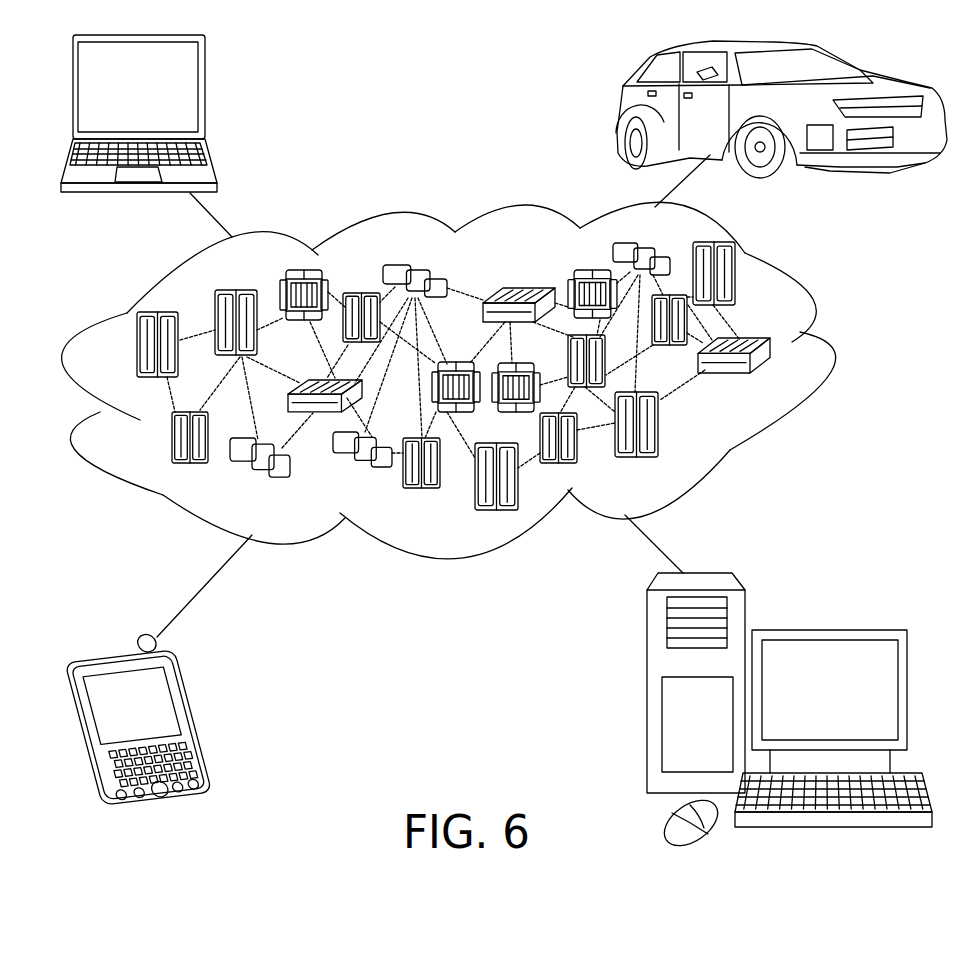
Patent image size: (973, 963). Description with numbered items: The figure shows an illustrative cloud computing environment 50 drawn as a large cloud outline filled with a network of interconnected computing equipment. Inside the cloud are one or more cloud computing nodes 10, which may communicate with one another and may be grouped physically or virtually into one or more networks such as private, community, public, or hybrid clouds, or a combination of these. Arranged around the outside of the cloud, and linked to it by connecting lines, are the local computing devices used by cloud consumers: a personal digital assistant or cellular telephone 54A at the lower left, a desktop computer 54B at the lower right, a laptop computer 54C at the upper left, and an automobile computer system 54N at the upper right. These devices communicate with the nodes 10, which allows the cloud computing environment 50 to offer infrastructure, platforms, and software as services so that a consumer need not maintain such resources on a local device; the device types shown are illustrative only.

The cloud computing node 10 is at (773, 385).
The cloud computing environment 50 is at (835, 352).
The personal digital assistant or cellular telephone 54A is at (195, 718).
The desktop computer 54B is at (825, 630).
The laptop computer 54C is at (207, 95).
The automobile computer system 54N is at (620, 110).